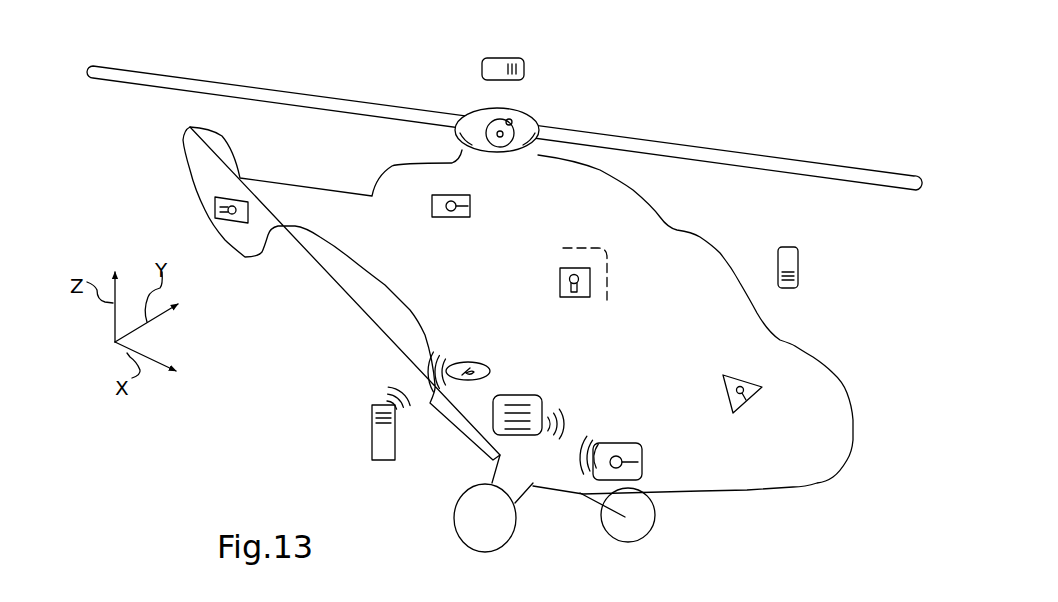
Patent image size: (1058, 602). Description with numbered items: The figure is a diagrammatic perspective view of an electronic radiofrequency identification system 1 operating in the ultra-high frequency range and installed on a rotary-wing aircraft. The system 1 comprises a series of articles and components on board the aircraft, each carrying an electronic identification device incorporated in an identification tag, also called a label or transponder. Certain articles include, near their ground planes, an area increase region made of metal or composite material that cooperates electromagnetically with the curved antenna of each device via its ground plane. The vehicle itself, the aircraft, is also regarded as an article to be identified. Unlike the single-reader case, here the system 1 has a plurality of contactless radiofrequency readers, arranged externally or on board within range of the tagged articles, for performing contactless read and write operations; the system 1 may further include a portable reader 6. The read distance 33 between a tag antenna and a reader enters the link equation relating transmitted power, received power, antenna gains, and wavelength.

The electronic radiofrequency identification system 1 is at (226, 413).
The portable reader 6 is at (372, 437).
The read distance 33 is at (412, 373).